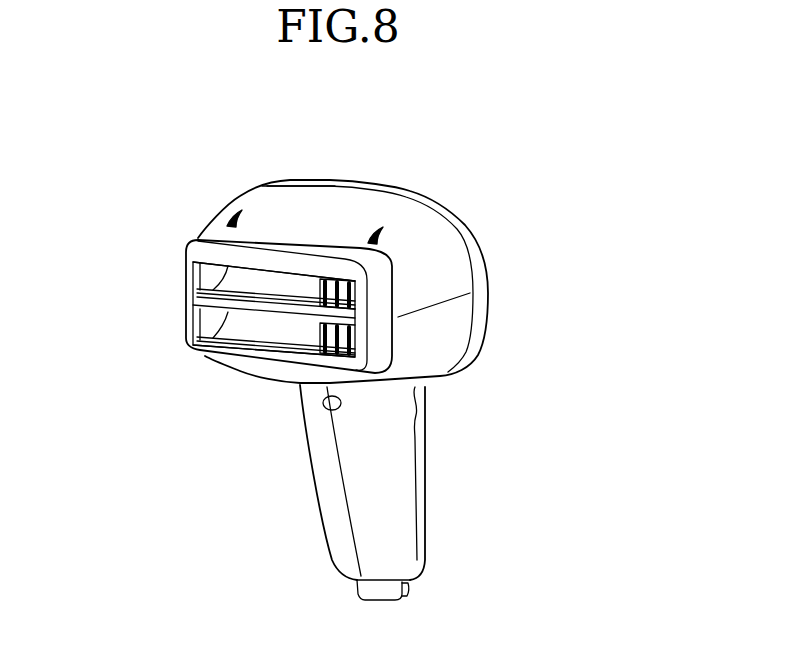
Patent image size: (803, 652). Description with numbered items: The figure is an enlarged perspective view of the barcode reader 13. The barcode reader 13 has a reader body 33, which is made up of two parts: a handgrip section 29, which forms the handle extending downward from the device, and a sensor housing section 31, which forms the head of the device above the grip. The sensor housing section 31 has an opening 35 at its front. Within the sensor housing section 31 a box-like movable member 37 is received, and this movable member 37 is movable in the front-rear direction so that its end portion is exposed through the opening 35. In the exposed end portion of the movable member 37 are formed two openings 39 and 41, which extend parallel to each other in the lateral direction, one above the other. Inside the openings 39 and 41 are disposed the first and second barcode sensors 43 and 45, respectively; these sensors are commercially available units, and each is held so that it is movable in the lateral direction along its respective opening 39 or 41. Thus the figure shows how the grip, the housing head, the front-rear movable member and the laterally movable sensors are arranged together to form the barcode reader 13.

The barcode reader 13 is at (481, 241).
The handgrip section 29 is at (385, 447).
The sensor housing section 31 is at (422, 373).
The reader body 33 is at (433, 486).
The opening 35 is at (292, 243).
The movable member 37 is at (187, 252).
The opening 39 is at (197, 292).
The opening 41 is at (200, 344).
The first barcode sensor 43 is at (355, 290).
The second barcode sensor 45 is at (355, 337).